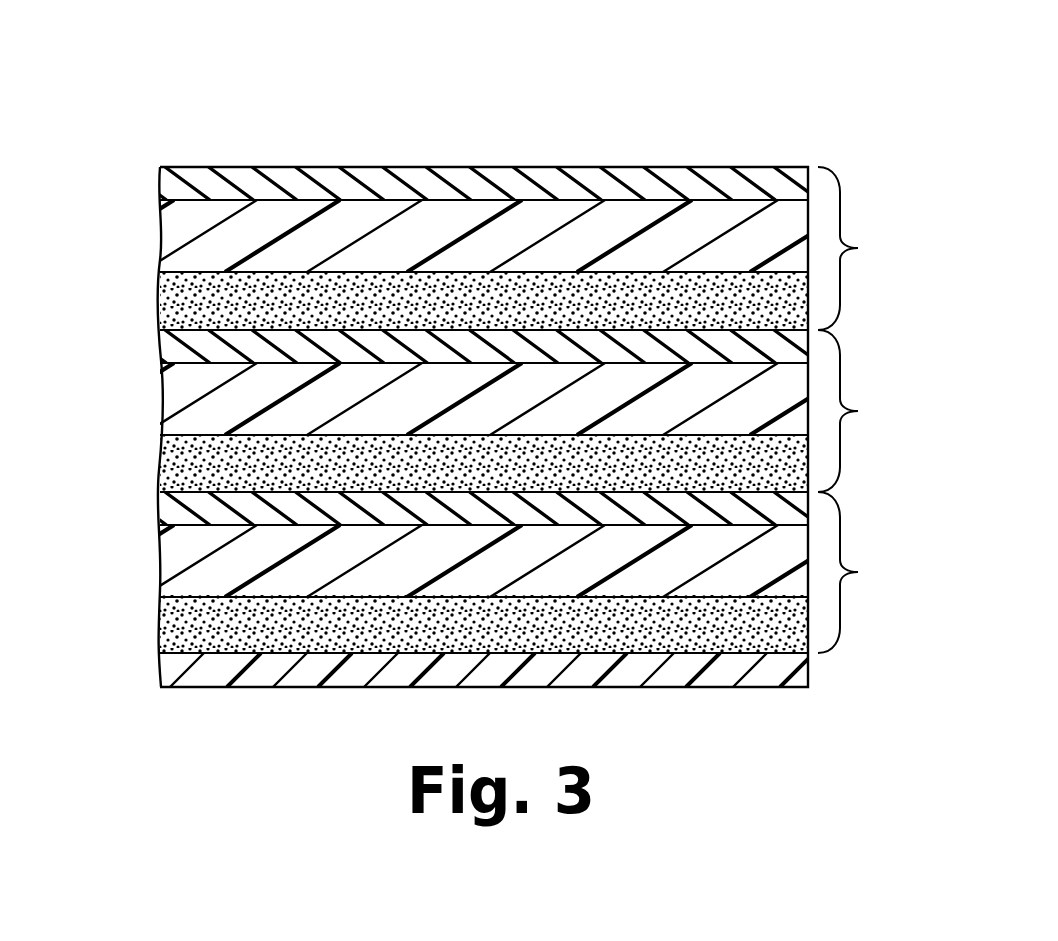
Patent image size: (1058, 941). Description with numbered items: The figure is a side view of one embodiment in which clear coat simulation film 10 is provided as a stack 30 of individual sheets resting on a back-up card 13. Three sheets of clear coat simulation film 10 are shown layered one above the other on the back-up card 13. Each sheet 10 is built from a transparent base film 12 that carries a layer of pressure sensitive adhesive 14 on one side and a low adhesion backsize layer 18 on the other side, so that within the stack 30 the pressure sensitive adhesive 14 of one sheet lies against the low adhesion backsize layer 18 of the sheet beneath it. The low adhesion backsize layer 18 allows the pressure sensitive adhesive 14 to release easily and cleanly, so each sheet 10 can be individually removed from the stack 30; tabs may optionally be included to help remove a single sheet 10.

The stack 30 is at (582, 98).
The clear coat simulation film 10 is at (870, 410).
The low adhesion backsize layer 18 is at (160, 185).
The transparent base film 12 is at (160, 228).
The pressure sensitive adhesive 14 is at (160, 297).
The back-up card 13 is at (778, 668).